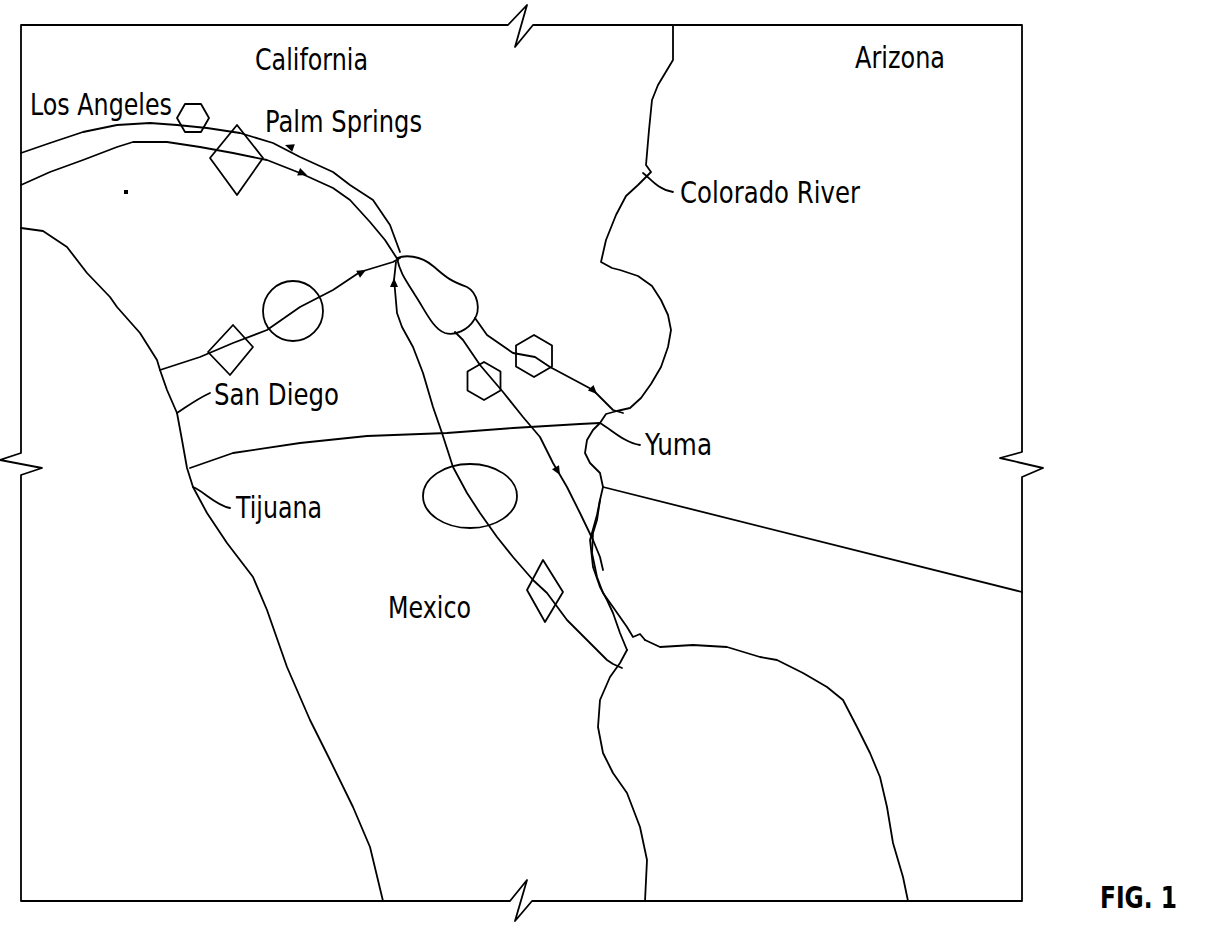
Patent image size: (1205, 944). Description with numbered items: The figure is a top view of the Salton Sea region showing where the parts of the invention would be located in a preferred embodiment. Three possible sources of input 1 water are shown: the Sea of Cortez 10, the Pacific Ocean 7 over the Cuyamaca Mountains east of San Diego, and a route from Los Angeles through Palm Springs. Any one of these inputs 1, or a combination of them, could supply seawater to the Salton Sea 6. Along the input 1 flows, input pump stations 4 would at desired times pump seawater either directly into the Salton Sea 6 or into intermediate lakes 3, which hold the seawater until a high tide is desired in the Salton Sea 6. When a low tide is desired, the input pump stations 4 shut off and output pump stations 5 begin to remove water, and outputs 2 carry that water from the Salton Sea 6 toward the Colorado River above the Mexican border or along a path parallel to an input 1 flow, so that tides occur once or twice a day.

The input 1 is at (373, 413).
The output 2 is at (322, 268).
The intermediate lake 3 is at (390, 382).
The input pump station 4 is at (237, 125).
The output pump station 5 is at (190, 101).
The Salton Sea 6 is at (448, 280).
The Pacific Ocean 7 is at (202, 564).
The Sea of Cortez 10 is at (753, 770).